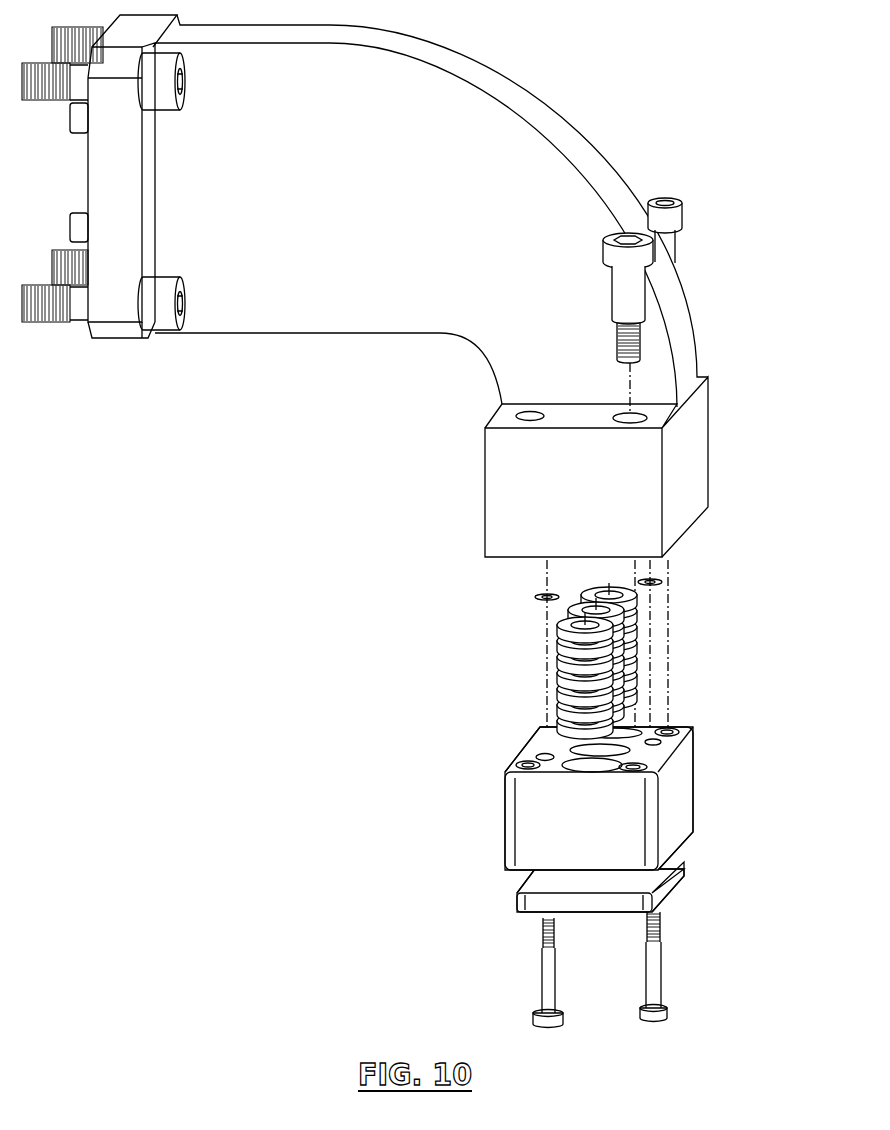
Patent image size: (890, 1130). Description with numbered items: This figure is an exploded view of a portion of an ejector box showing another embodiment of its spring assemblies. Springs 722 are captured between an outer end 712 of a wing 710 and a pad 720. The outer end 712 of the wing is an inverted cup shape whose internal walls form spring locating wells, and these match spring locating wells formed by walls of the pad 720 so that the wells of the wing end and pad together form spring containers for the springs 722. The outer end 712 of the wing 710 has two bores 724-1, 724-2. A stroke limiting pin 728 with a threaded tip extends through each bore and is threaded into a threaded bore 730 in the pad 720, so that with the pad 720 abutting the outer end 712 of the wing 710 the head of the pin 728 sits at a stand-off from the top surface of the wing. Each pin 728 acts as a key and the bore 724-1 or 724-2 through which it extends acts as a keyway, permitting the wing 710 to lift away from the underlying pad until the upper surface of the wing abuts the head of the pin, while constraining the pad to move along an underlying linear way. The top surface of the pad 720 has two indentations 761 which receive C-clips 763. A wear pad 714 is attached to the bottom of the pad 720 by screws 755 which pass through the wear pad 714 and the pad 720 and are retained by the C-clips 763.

The wing 710 is at (330, 319).
The outer end of wing 712 is at (485, 488).
The wear pad 714 is at (517, 903).
The pad 720 is at (505, 806).
The springs 722 is at (557, 670).
The bore 724-1 is at (528, 415).
The bore 724-2 is at (634, 414).
The stroke limiting pin 728 is at (681, 228).
The threaded bore 730 is at (633, 765).
The screws 755 is at (540, 982).
The indentations 761 is at (525, 748).
The C-clips 763 is at (538, 596).